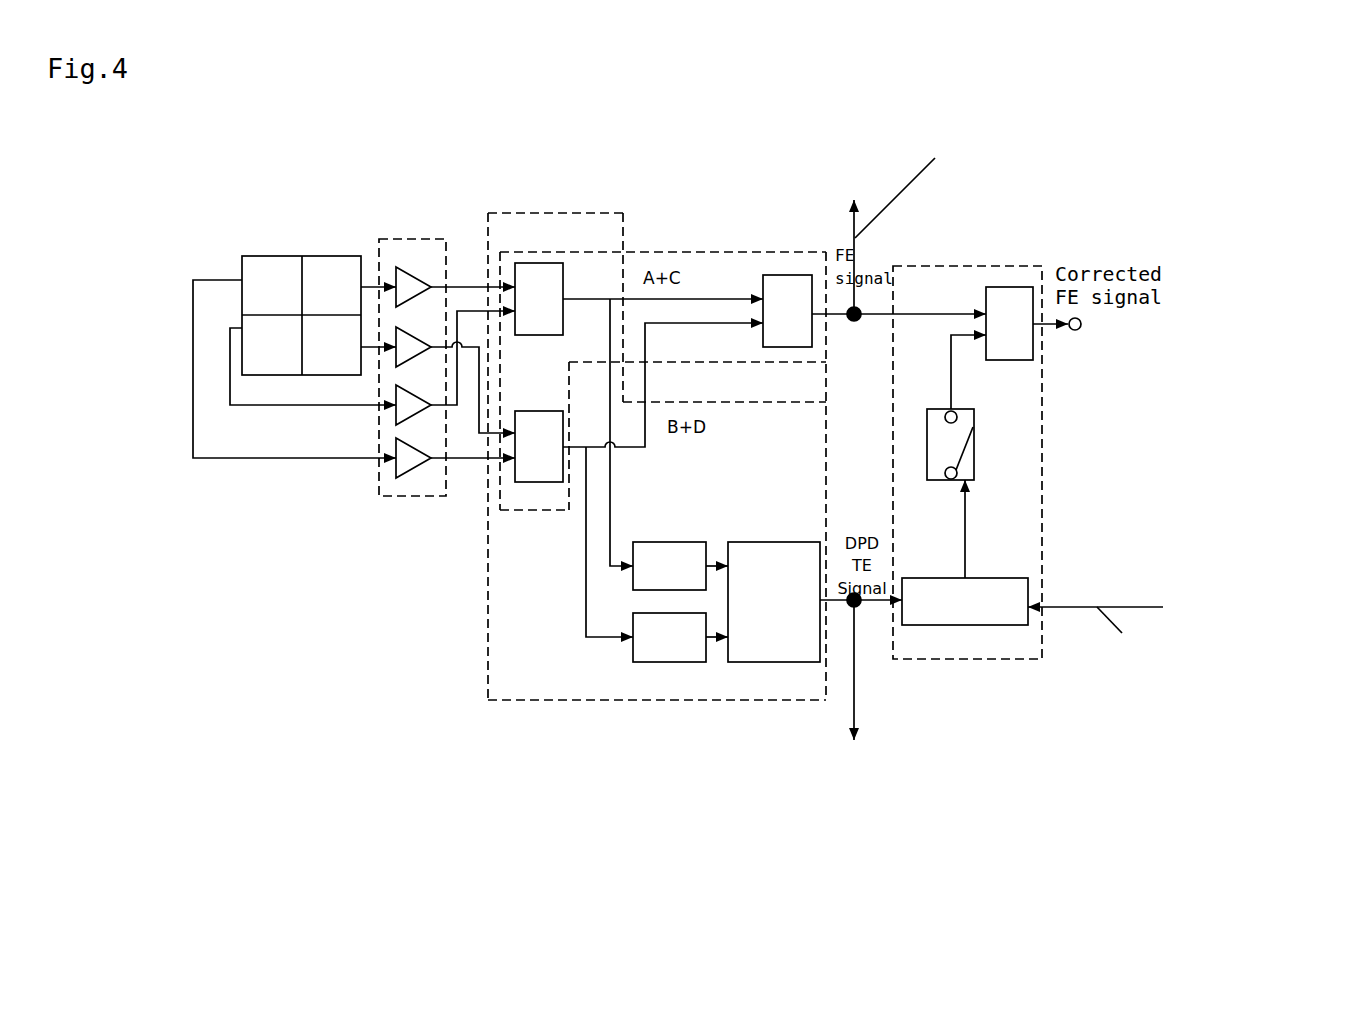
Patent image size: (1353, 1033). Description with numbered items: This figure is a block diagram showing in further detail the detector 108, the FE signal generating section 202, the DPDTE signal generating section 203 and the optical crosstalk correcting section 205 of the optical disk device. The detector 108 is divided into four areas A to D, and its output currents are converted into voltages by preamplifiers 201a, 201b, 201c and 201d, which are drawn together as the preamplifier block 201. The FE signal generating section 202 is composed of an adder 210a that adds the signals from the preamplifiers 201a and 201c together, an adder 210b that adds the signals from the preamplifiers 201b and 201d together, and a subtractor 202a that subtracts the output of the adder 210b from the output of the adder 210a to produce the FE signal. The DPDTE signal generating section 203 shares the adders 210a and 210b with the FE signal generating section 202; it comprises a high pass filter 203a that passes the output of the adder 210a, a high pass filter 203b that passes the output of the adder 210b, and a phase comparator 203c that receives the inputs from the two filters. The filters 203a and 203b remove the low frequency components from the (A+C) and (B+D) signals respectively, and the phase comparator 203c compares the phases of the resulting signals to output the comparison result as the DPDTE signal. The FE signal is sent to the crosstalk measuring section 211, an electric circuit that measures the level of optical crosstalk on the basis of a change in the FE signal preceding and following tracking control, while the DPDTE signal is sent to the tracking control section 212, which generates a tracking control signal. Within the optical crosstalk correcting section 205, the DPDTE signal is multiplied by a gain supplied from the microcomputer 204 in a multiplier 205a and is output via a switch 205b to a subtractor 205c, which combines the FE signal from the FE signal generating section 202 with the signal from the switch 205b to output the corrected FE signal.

The detector 108 is at (243, 253).
The amplifier section 201 is at (393, 345).
The preamplifier 201a is at (398, 268).
The preamplifier 201b is at (415, 343).
The preamplifier 201c is at (393, 413).
The preamplifier 201d is at (418, 470).
The adder 210a is at (542, 268).
The adder 210b is at (527, 417).
The FE signal generating section 202 is at (754, 266).
The subtractor 202a is at (822, 250).
The DPDTE signal generating section 203 is at (641, 623).
The high pass filter 203a is at (650, 540).
The high pass filter 203b is at (633, 645).
The phase comparator 203c is at (758, 540).
The optical crosstalk correcting section 205 is at (987, 461).
The multiplier 205a is at (975, 577).
The switch 205b is at (977, 445).
The subtractor 205c is at (1000, 286).
The crosstalk measuring section 211 is at (991, 200).
The tracking control section 212 is at (871, 718).
The microcomputer 204 is at (1188, 652).